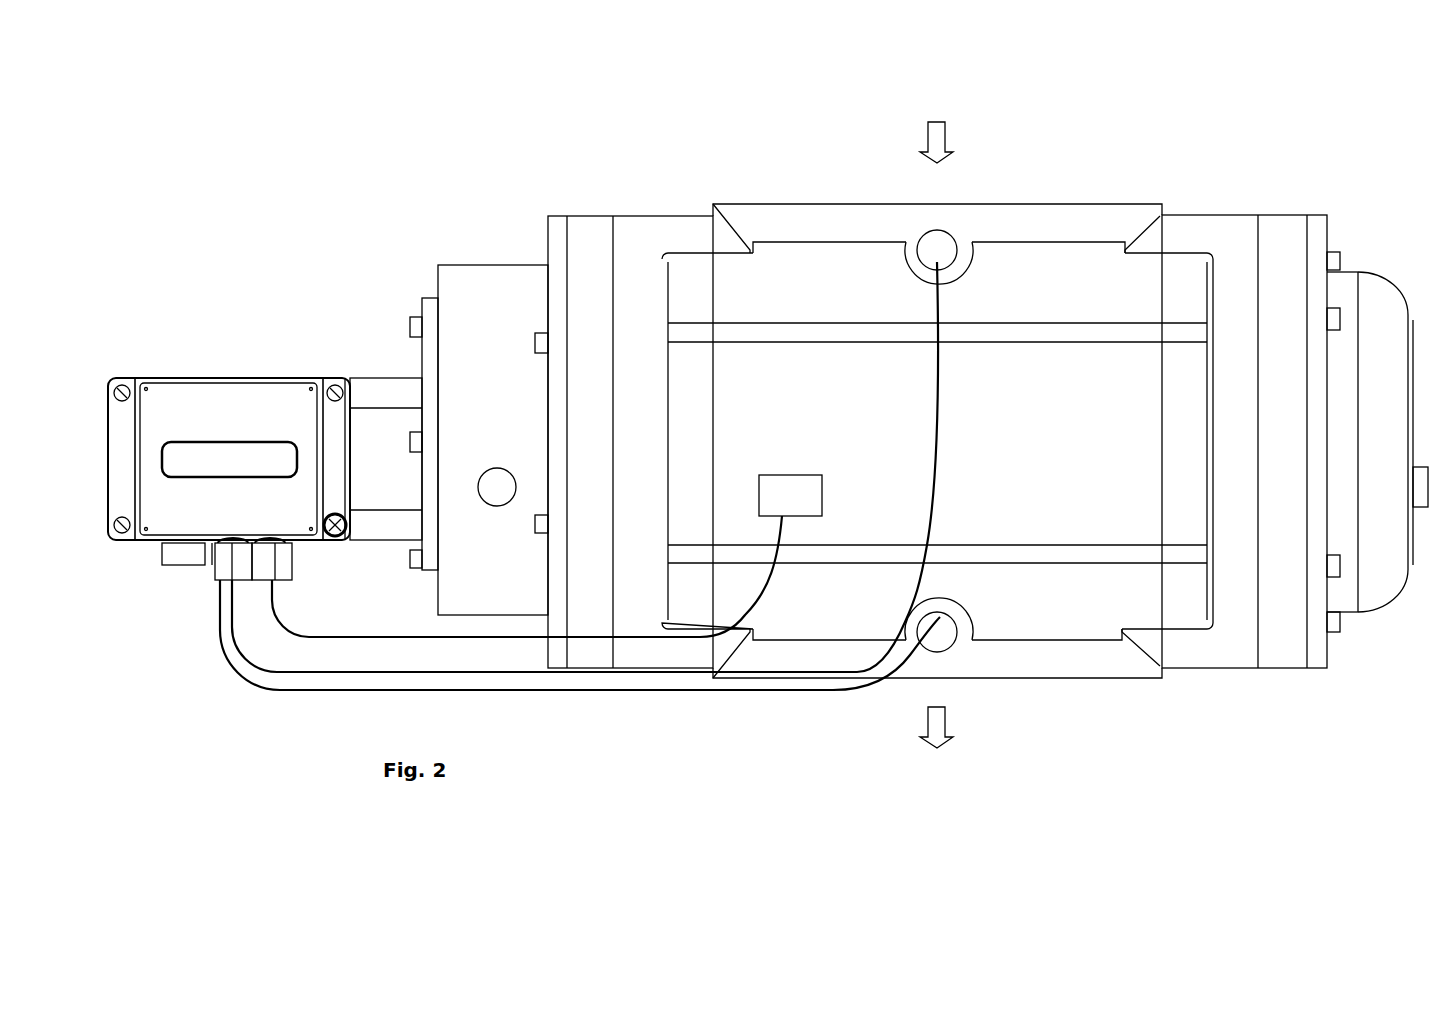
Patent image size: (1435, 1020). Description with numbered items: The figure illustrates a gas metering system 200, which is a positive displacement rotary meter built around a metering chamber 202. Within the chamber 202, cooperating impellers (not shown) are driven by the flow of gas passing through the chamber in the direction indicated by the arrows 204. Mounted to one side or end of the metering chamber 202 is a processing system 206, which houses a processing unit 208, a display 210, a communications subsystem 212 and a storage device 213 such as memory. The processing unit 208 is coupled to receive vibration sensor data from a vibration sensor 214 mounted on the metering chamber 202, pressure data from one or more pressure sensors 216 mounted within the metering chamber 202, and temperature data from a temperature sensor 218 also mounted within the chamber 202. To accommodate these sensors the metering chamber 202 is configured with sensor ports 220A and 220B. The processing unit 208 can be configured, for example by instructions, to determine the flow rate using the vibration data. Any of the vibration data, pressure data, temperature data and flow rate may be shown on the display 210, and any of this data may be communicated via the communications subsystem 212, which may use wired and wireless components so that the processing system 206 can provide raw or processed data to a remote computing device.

The gas metering system 200 is at (889, 418).
The metering chamber 202 is at (937, 441).
The arrows 204 is at (946, 133).
The processing system 206 is at (229, 475).
The processing unit 208 is at (143, 374).
The display 210 is at (229, 459).
The communications subsystem 212 is at (180, 575).
The storage device 213 is at (212, 374).
The vibration sensor 214 is at (547, 556).
The pressure sensor 216 is at (928, 258).
The temperature sensor 218 is at (947, 616).
The sensor port 220A is at (950, 237).
The sensor port 220B is at (955, 625).